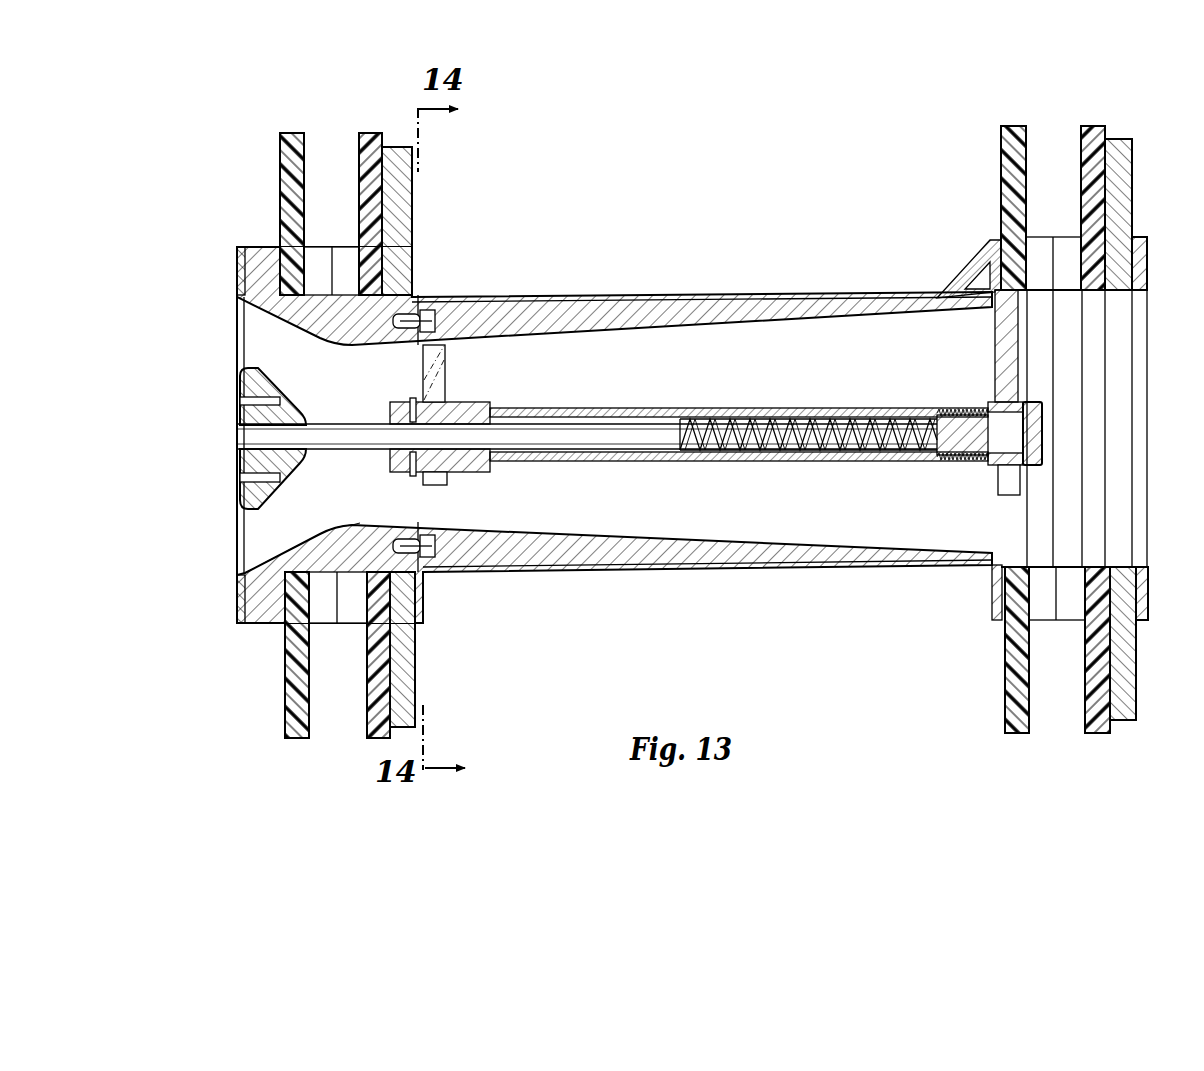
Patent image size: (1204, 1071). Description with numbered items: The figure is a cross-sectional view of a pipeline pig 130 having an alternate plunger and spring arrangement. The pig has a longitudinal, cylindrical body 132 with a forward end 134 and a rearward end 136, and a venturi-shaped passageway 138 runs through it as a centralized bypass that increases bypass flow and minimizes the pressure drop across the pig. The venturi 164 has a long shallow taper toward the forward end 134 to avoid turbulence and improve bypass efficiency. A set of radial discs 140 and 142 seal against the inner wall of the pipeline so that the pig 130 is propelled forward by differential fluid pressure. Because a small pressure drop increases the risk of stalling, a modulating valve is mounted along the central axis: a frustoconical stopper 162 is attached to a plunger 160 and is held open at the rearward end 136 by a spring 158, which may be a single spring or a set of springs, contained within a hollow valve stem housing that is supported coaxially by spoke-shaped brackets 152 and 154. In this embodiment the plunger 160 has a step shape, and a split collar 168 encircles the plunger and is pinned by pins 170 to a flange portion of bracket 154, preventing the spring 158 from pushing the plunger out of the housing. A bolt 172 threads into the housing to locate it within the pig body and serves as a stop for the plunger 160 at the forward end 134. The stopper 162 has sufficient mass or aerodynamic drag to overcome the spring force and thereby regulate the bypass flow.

The pipeline pig 130 is at (603, 282).
The cylindrical body 132 is at (692, 297).
The forward end 134 is at (1147, 680).
The rearward end 136 is at (230, 645).
The venturi-shaped passageway 138 is at (777, 357).
The radial disc 140 is at (300, 125).
The radial disc 142 is at (1028, 115).
The spoke-shaped bracket 152 is at (1000, 358).
The spoke-shaped bracket 154 is at (445, 378).
The spring 158 is at (826, 460).
The plunger 160 is at (612, 432).
The stopper 162 is at (247, 387).
The venturi 164 is at (345, 517).
The split collar 168 is at (390, 405).
The pin 170 is at (412, 398).
The bolt 172 is at (965, 463).